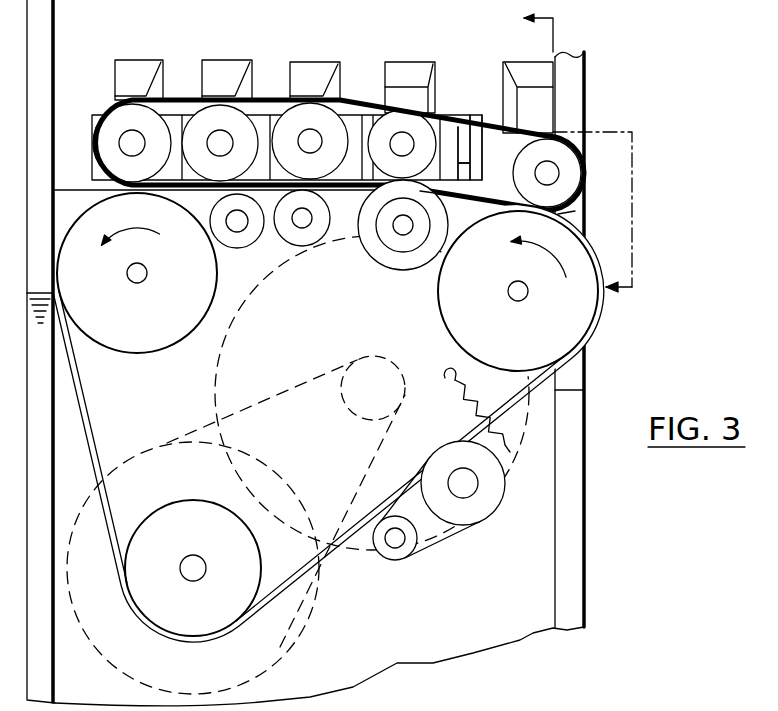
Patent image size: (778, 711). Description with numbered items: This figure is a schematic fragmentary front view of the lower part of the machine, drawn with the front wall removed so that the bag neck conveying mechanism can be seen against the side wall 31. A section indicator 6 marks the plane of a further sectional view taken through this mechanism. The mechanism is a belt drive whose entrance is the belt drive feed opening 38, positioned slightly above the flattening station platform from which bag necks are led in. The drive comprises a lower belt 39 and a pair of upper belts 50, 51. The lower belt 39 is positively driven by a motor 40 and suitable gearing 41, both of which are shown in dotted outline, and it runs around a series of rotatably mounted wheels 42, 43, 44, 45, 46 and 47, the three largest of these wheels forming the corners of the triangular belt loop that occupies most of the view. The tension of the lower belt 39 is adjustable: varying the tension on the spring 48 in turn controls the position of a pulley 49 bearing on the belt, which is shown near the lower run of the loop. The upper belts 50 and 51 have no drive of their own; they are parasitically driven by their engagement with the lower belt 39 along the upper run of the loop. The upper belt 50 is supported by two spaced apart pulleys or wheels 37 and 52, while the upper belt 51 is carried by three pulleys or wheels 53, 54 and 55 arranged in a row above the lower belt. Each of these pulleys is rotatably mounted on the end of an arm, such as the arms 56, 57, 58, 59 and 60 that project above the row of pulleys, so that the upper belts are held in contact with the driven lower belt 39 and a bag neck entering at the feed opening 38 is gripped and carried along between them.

The section line 6- 6 is at (587, 154).
The side wall 31 is at (588, 62).
The pulley 37 is at (561, 155).
The belt drive feed opening 38 is at (569, 212).
The lower belt 39 is at (388, 485).
The motor 40 is at (295, 645).
The gearing 41 is at (215, 392).
The wheel 42 is at (165, 515).
The wheel 43 is at (460, 305).
The wheel 44 is at (387, 260).
The wheel 45 is at (313, 233).
The wheel 46 is at (240, 243).
The wheel 47 is at (135, 337).
The spring 48 is at (460, 403).
The pulley 49 is at (485, 507).
The upper belt 50 is at (448, 118).
The upper belt 51 is at (265, 100).
The pulley 52 is at (383, 115).
The pulley 53 is at (312, 110).
The pulley 54 is at (218, 110).
The pulley 55 is at (113, 120).
The arm 56 is at (522, 68).
The arm 57 is at (412, 68).
The arm 58 is at (302, 67).
The arm 59 is at (233, 65).
The arm 60 is at (140, 65).